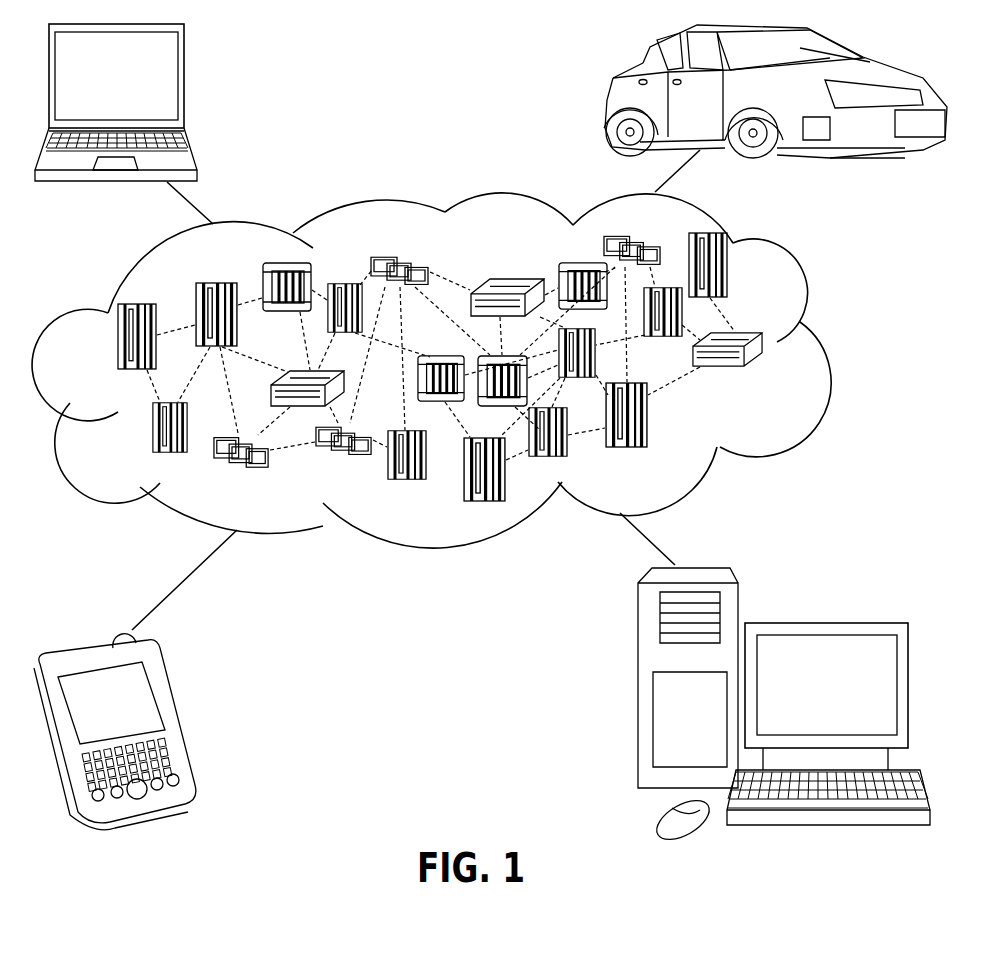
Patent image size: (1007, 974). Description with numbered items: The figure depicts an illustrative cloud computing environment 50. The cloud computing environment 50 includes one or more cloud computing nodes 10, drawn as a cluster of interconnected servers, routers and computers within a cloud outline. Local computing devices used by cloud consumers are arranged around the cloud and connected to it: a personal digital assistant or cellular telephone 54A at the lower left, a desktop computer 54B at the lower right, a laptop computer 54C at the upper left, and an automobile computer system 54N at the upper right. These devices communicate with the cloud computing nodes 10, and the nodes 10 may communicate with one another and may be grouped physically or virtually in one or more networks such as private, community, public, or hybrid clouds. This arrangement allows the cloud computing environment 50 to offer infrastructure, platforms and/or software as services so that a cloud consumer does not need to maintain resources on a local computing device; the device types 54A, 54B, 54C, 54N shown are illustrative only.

The cloud computing nodes 10 is at (767, 373).
The cloud computing environment 50 is at (826, 347).
The personal digital assistant (PDA) or cellular telephone 54A is at (170, 713).
The desktop computer 54B is at (826, 623).
The laptop computer 54C is at (183, 85).
The automobile computer system 54N is at (612, 108).